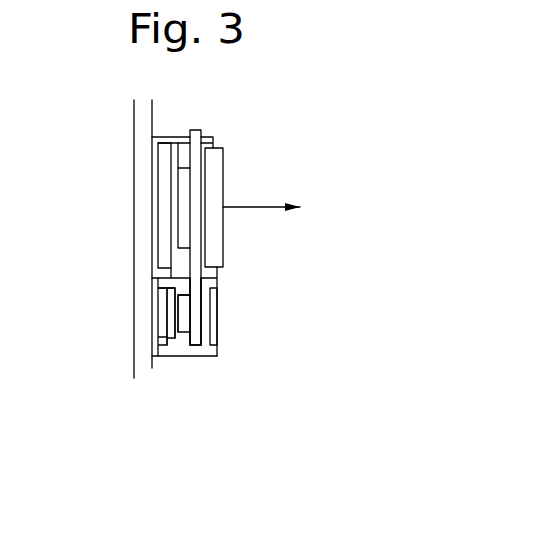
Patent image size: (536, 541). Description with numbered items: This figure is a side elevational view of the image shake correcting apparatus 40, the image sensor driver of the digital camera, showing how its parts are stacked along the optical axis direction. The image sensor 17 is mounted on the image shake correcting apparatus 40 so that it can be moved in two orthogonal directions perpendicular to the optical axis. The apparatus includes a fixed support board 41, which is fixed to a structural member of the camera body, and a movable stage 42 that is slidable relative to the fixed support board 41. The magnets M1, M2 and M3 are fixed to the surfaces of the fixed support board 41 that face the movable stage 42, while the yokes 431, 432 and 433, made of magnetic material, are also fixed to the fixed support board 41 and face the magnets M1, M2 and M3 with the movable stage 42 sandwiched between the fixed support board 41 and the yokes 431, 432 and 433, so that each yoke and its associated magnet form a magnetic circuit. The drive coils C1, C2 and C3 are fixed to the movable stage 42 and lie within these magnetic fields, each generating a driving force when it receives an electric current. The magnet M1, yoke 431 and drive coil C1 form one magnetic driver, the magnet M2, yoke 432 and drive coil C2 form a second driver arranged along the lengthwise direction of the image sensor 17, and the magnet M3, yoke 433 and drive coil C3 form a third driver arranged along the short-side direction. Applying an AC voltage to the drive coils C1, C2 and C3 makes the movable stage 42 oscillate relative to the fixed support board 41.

The image shake correcting apparatus 40 is at (335, 468).
The fixed support board 41 is at (135, 378).
The movable stage 42 is at (217, 354).
The image sensor 17 is at (213, 163).
The magnet M1 is at (160, 357).
The magnet M2 is at (154, 376).
The magnet M3 is at (157, 137).
The drive coil C1 is at (185, 357).
The drive coil C2 is at (205, 380).
The drive coil C3 is at (190, 167).
The yoke 431 is at (200, 337).
The yoke 432 is at (244, 371).
The yoke 433 is at (205, 136).